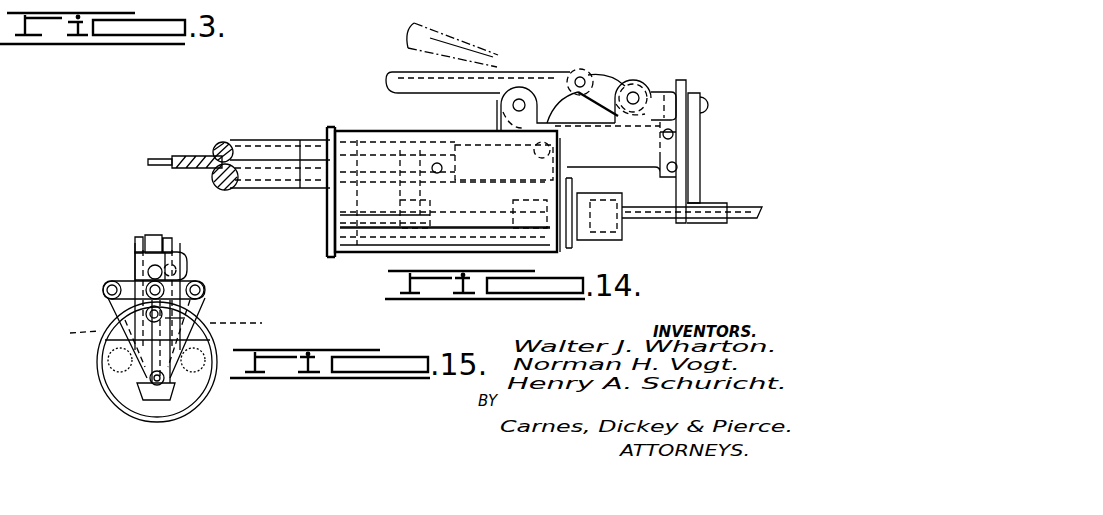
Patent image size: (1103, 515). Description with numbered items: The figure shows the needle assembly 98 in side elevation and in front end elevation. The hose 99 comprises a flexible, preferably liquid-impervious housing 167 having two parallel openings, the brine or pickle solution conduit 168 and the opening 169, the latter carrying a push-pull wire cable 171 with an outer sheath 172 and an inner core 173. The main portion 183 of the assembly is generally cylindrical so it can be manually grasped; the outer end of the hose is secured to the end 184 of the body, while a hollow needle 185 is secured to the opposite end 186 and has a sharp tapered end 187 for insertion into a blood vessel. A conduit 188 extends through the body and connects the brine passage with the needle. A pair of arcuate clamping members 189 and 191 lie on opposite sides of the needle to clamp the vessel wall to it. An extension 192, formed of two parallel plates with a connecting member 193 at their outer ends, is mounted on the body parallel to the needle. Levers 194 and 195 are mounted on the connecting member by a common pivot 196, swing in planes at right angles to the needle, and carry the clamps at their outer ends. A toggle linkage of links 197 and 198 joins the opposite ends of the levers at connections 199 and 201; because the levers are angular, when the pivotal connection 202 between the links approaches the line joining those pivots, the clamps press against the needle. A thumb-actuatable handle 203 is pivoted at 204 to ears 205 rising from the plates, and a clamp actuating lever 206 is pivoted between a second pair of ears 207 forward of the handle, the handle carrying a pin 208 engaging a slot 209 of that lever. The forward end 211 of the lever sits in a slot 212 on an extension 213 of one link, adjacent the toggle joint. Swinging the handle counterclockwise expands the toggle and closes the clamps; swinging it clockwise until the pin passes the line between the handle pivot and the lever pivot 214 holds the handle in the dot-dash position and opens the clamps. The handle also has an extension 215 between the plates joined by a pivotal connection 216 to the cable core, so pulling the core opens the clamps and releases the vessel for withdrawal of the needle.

In FIG. 14, the needle assembly 98 is at (368, 262).
In FIG. 14, the hose 99 is at (310, 192).
In FIG. 14, the housing 167 is at (275, 188).
In FIG. 14, the brine or pickle solution conduit 168 is at (212, 178).
In FIG. 14, the opening 169 is at (232, 142).
In FIG. 14, the wire cable 171 is at (178, 158).
In FIG. 14, the outer sheath 172 is at (220, 146).
In FIG. 14, the inner core 173 is at (162, 158).
In FIG. 14, the main portion 183 is at (345, 255).
In FIG. 14, the end 184 is at (330, 228).
In FIG. 14, the hollow needle 185 is at (690, 222).
In FIG. 15, the hollow needle 185 is at (162, 385).
In FIG. 14, the end 186 is at (580, 245).
In FIG. 14, the sharp tapered end 187 is at (763, 212).
In FIG. 14, the conduit 188 is at (452, 233).
In FIG. 15, the clamping member 189 is at (140, 385).
In FIG. 15, the clamping member 191 is at (174, 385).
In FIG. 14, the extension 192 is at (596, 166).
In FIG. 15, the extension 192 is at (168, 328).
In FIG. 14, the connecting member 193 is at (695, 140).
In FIG. 15, the lever 194 is at (145, 315).
In FIG. 15, the lever 195 is at (200, 316).
In FIG. 15, the common pivot 196 is at (203, 302).
In FIG. 15, the link 197 is at (122, 280).
In FIG. 15, the link 198 is at (183, 282).
In FIG. 15, the connection 199 is at (108, 290).
In FIG. 15, the connection 201 is at (198, 288).
In FIG. 15, the pivotal connection 202 is at (177, 257).
In FIG. 14, the thumb-actuatable handle 203 is at (390, 80).
In FIG. 14, the pivot 204 is at (516, 100).
In FIG. 14, the ears 205 is at (518, 90).
In FIG. 14, the clamp actuating lever 206 is at (610, 92).
In FIG. 14, the ears 207 is at (658, 88).
In FIG. 14, the pin 208 is at (580, 78).
In FIG. 14, the slot 209 is at (585, 88).
In FIG. 14, the forward end 211 is at (702, 102).
In FIG. 15, the slot 212 is at (163, 250).
In FIG. 15, the extension 213 is at (132, 268).
In FIG. 14, the pivot 214 is at (637, 95).
In FIG. 14, the extension 215 is at (598, 126).
In FIG. 14, the pivotal connection 216 is at (528, 158).